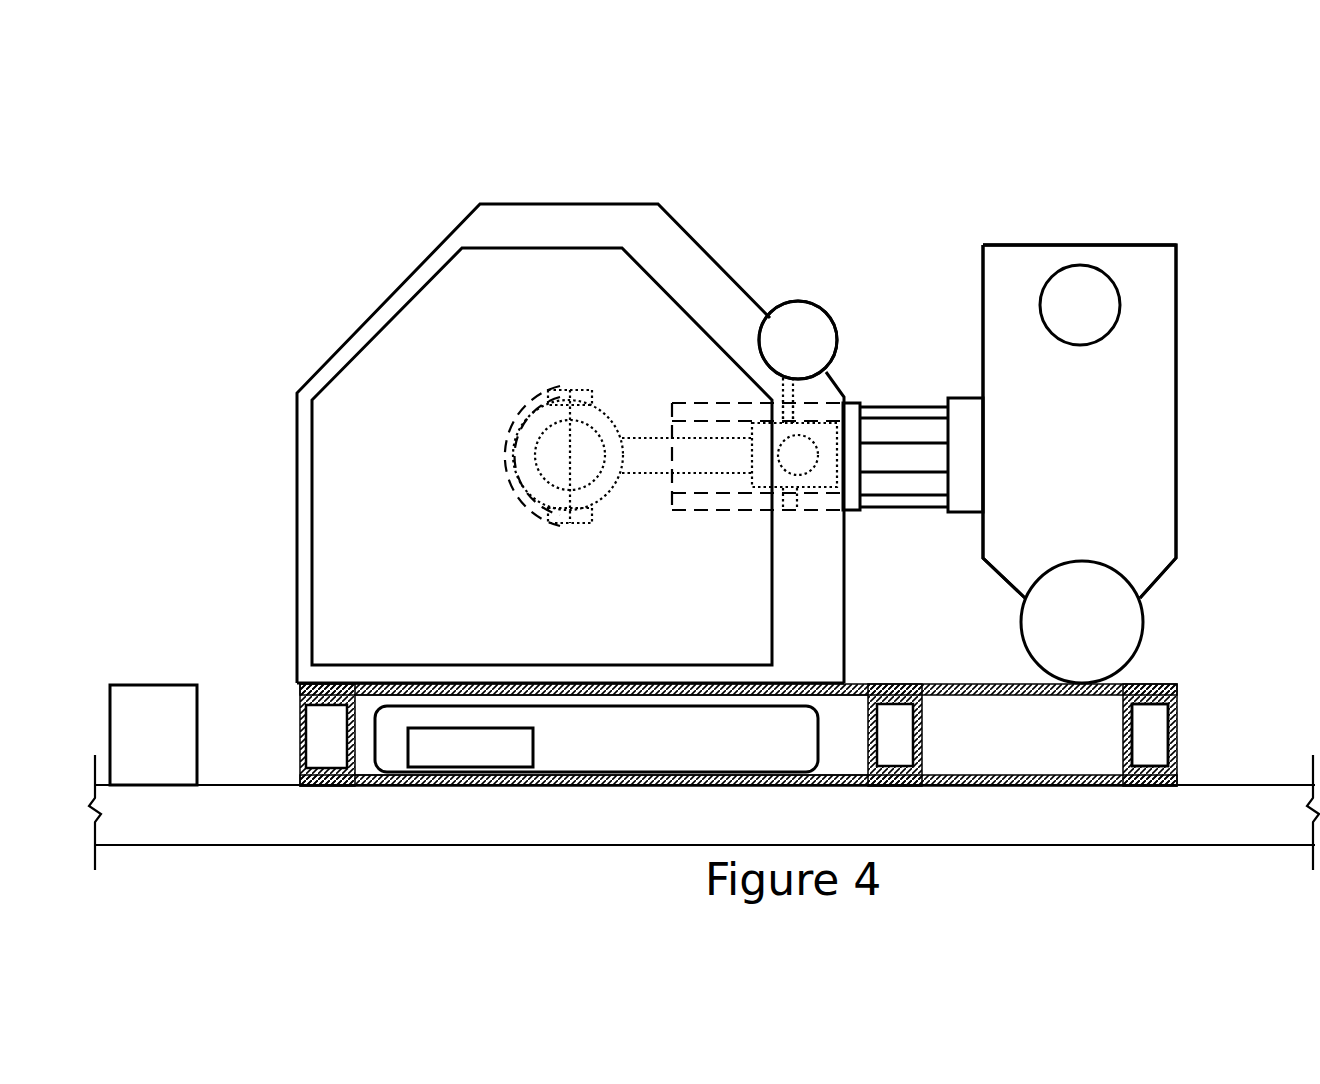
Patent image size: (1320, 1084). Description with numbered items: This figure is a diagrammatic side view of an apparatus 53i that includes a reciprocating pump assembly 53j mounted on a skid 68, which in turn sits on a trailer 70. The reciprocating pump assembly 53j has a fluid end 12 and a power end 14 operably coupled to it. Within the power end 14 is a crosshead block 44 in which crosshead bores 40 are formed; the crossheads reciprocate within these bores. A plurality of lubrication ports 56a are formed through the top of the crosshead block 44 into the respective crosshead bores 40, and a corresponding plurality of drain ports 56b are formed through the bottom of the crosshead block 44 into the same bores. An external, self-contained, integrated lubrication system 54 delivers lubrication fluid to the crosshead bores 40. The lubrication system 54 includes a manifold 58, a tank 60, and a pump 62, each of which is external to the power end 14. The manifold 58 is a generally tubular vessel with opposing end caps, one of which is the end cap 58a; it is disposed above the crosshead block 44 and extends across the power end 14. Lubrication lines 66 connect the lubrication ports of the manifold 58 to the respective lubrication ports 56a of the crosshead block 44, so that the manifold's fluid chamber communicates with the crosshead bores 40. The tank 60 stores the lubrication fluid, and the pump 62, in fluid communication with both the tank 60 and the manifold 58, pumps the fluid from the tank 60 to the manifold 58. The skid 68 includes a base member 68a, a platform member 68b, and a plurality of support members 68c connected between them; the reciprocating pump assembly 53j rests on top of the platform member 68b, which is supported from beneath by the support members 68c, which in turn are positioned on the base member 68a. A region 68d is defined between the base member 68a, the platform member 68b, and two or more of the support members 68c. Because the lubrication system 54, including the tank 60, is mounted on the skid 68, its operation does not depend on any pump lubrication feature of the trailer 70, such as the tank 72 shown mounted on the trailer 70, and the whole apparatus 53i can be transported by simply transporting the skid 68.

The fluid end 12 is at (1184, 355).
The power end 14 is at (371, 312).
The crosshead bores 40 is at (672, 474).
The crosshead block 44 is at (722, 506).
The apparatus 53i is at (1160, 160).
The reciprocating pump assembly 53j is at (1184, 281).
The lubrication system 54 is at (842, 286).
The lubrication ports 56a is at (797, 410).
The drain ports 56b is at (797, 498).
The manifold 58 is at (791, 301).
The end cap 58a is at (810, 350).
The tank 60 is at (662, 748).
The pump 62 is at (470, 747).
The lubrication lines 66 is at (797, 388).
The skid 68 is at (905, 684).
The base member 68a is at (1150, 786).
The platform member 68b is at (1157, 684).
The support members 68c is at (300, 746).
The region 68d is at (835, 745).
The trailer 70 is at (704, 812).
The tank 72 is at (153, 735).